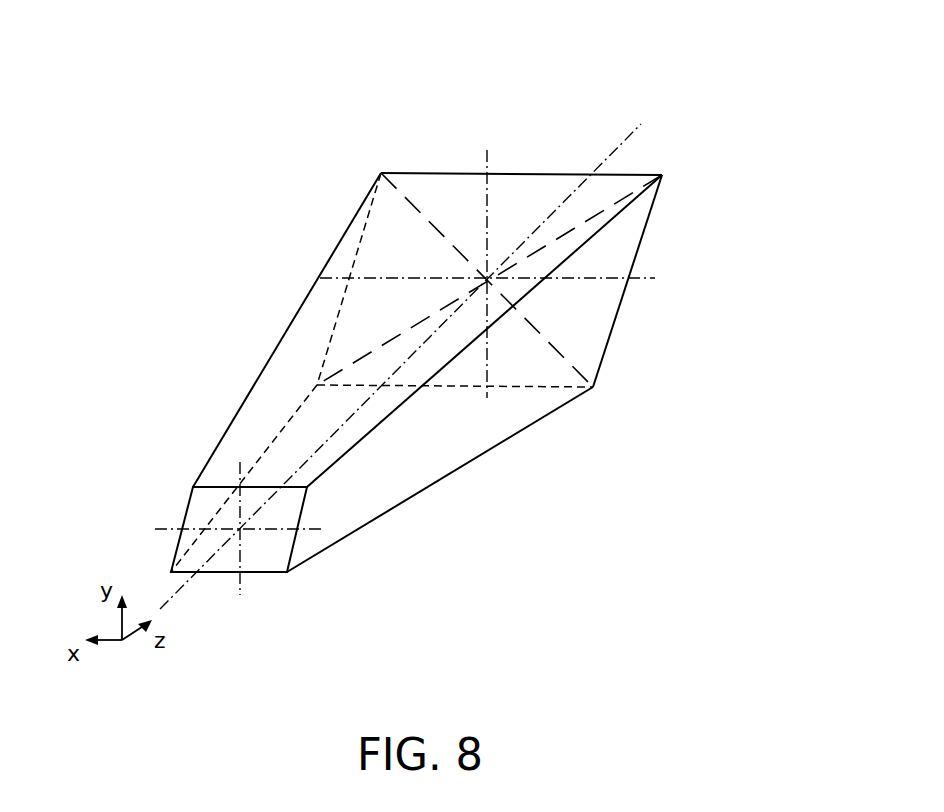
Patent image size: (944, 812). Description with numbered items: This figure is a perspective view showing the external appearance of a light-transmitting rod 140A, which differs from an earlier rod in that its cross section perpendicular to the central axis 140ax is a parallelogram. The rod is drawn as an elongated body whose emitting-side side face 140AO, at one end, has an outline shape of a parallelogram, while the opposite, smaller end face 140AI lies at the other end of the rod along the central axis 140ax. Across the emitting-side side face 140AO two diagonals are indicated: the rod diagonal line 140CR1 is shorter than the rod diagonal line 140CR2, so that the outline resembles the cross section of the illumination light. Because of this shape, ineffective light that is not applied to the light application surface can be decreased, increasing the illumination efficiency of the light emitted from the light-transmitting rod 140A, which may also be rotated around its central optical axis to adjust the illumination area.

The light-transmitting rod 140A is at (224, 96).
The emitting-side side face 140AO is at (523, 192).
The input face of prism 140AI is at (267, 565).
The central axis 140ax is at (318, 452).
The rod diagonal line 140CR1 is at (625, 168).
The rod diagonal line 140CR2 is at (408, 192).